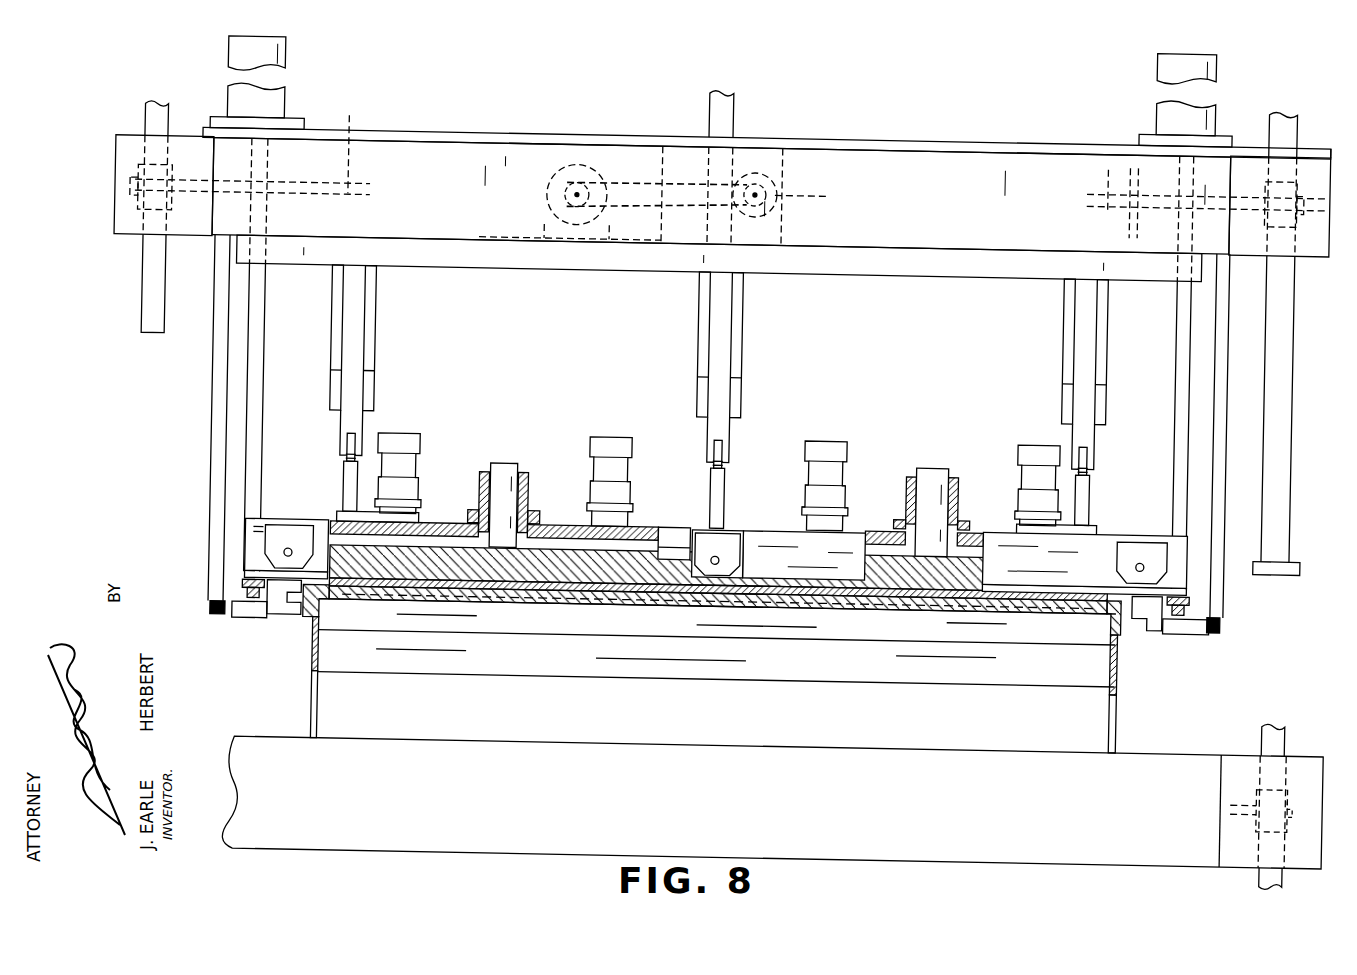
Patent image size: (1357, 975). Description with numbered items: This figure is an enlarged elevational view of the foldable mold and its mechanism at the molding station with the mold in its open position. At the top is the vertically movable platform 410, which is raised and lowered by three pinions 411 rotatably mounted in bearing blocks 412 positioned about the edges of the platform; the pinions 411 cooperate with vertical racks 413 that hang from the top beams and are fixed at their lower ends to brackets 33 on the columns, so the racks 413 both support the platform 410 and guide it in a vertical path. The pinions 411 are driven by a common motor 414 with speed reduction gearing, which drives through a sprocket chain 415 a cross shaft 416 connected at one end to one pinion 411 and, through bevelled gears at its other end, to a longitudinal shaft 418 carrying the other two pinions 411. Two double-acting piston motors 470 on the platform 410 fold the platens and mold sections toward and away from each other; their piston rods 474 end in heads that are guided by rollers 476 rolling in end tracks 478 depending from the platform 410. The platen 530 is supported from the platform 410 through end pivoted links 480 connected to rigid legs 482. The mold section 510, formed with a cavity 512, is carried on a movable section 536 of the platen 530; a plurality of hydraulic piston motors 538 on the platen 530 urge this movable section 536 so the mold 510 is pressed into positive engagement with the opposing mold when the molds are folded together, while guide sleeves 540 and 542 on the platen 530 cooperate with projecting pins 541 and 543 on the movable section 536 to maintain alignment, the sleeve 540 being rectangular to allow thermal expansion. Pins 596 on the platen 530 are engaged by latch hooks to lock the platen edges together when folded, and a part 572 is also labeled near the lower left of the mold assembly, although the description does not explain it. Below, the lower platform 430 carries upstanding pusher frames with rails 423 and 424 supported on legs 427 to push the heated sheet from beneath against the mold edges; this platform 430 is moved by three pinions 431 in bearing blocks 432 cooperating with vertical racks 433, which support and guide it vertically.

The vertically movable platform 410 is at (470, 181).
The pinions 411 is at (135, 168).
The bearing blocks 412 is at (115, 225).
The vertical racks 413 is at (150, 318).
The motor 414 is at (577, 137).
The sprocket chain 415 is at (657, 147).
The cross shaft 416 is at (745, 135).
The longitudinal shaft 418 is at (347, 150).
The rail 423 is at (838, 672).
The rail 424 is at (312, 665).
The legs 427 is at (312, 712).
The lower platform 430 is at (626, 781).
The pinions 431 is at (1290, 775).
The bearing blocks 432 is at (1243, 755).
The vertical racks 433 is at (1282, 725).
The double-acting piston motors 470 is at (228, 55).
The piston rods 474 is at (258, 320).
The rollers 476 is at (240, 612).
The end tracks 478 is at (213, 410).
The end pivoted links 480 is at (350, 487).
The rigid legs 482 is at (375, 333).
The mold section 510 is at (553, 642).
The cavity 512 is at (697, 622).
The platen 530 is at (677, 530).
The movable section 536 is at (985, 570).
The hydraulic piston motors 538 is at (400, 437).
The guide sleeve 540 is at (520, 468).
The projecting pin 541 is at (500, 470).
The guide sleeve 542 is at (955, 478).
The projecting pin 543 is at (925, 472).
The bracket 572 is at (315, 630).
The pins 596 is at (290, 556).
The brackets 33 is at (1275, 575).